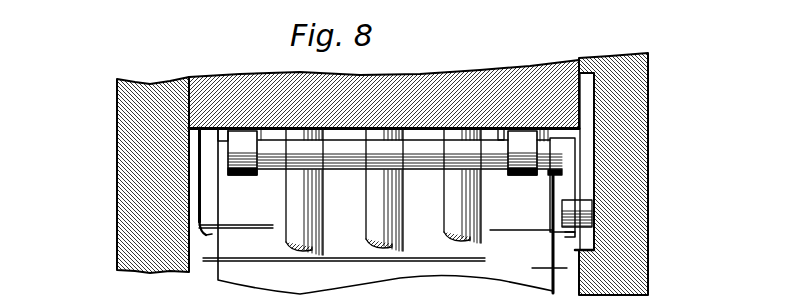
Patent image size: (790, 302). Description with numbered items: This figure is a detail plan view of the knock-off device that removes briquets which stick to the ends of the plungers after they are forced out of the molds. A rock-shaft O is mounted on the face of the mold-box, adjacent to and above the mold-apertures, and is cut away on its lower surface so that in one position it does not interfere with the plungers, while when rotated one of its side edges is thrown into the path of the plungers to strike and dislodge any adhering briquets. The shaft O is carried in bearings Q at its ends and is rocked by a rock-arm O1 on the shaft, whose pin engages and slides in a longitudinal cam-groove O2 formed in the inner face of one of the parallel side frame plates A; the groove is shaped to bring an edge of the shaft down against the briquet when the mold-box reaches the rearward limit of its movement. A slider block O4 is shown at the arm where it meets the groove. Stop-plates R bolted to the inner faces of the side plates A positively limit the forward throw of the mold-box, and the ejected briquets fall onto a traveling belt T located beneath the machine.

The side frame plate A is at (117, 202).
The traveling belt T is at (383, 211).
The rock-shaft O is at (410, 157).
The bearing Q is at (382, 153).
The rock-arm O1 is at (562, 188).
The cam-groove O2 is at (584, 167).
The slider block O4 is at (582, 211).
The stop-plate R is at (207, 234).